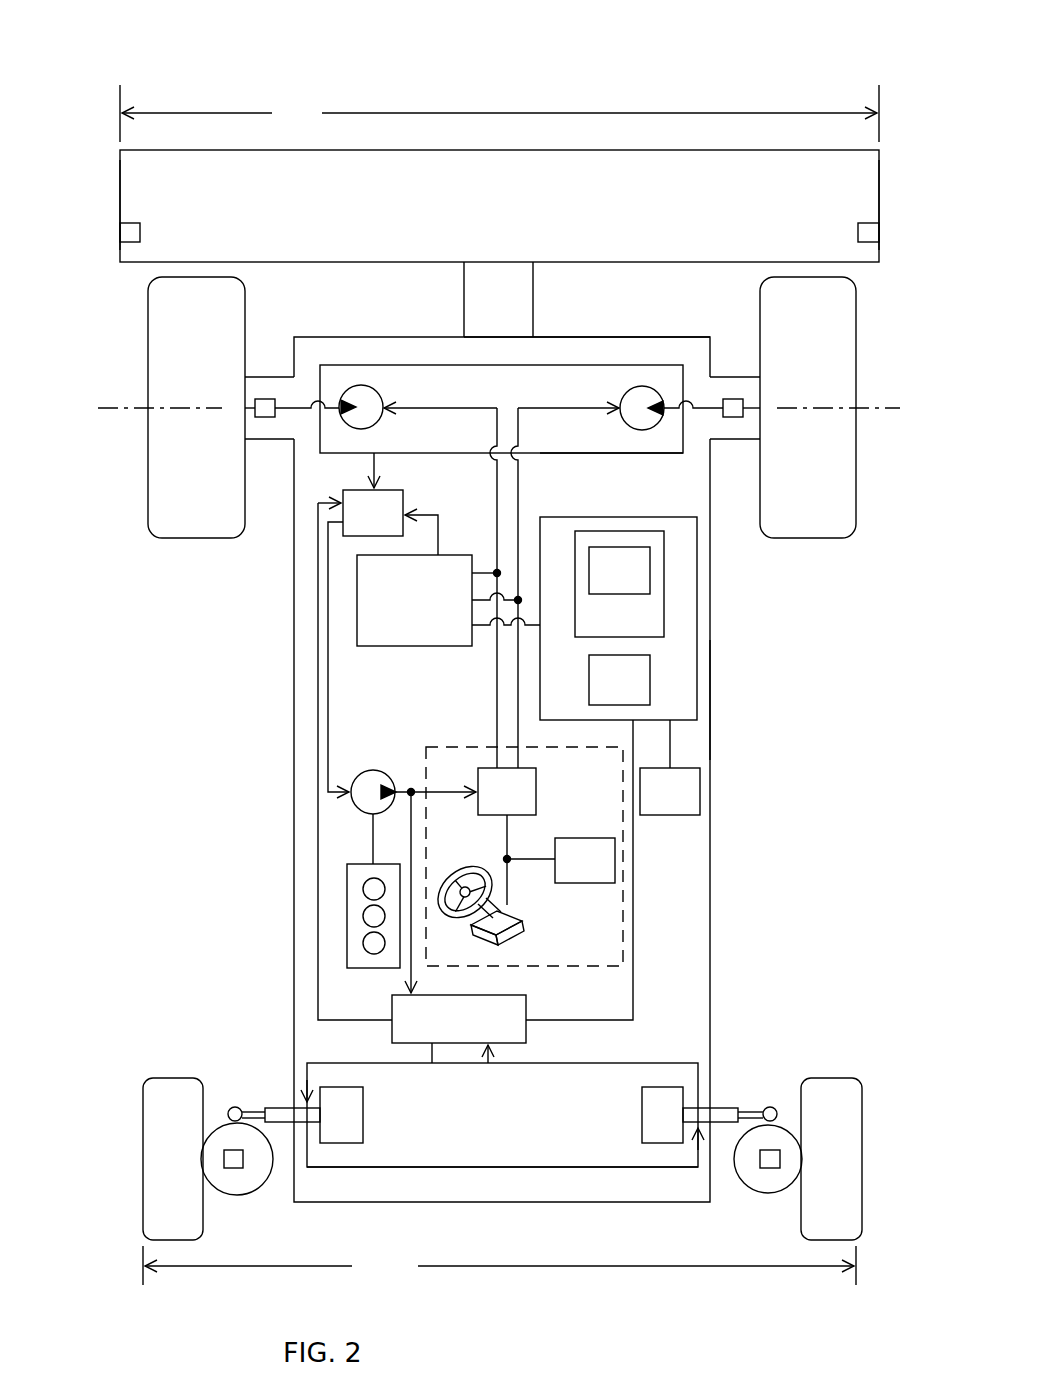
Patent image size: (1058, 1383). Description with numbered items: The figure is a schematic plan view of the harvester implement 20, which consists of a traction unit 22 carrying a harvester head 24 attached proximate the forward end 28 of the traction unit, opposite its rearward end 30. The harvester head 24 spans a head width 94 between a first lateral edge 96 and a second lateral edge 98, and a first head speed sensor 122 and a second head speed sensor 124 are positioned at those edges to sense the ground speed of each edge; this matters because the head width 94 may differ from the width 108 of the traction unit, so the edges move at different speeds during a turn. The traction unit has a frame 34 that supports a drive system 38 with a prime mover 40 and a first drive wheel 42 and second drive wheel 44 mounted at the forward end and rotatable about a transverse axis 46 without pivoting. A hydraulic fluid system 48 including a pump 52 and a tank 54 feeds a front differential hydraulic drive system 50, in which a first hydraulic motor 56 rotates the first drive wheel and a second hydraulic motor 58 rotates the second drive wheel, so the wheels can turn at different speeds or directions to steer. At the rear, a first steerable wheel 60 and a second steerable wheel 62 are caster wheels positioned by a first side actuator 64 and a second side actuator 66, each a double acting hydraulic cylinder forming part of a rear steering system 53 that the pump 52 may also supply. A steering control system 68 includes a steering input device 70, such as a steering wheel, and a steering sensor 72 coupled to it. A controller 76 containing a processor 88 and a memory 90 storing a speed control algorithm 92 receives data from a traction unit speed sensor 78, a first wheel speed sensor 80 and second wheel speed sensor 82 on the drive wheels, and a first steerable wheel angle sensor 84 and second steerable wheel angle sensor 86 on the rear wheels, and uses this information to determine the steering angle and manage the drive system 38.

The harvester implement 20 is at (697, 56).
The traction unit 22 is at (712, 850).
The harvester head 24 is at (403, 147).
The forward end 28 is at (583, 337).
The rearward end 30 is at (630, 1202).
The frame 34 is at (710, 707).
The drive system 38 is at (597, 461).
The prime mover 40 is at (355, 864).
The first drive wheel 42 is at (184, 500).
The second drive wheel 44 is at (805, 500).
The transverse axis 46 is at (95, 412).
The hydraulic fluid system 48 is at (503, 530).
The front differential hydraulic drive system 50 is at (545, 365).
The pump 52 is at (375, 770).
The rear steering system 53 is at (488, 1172).
The tank 54 is at (357, 526).
The first hydraulic motor 56 is at (378, 392).
The second hydraulic motor 58 is at (620, 395).
The first steerable wheel 60 is at (175, 1110).
The second steerable wheel 62 is at (830, 1110).
The first side actuator 64 is at (280, 1108).
The second side actuator 66 is at (725, 1108).
The steering control system 68 is at (540, 968).
The steering input device 70 is at (500, 925).
The steering sensor 72 is at (569, 873).
The controller 76 is at (697, 663).
The traction unit speed sensor 78 is at (654, 805).
The first wheel speed sensor 80 is at (265, 399).
The second wheel speed sensor 82 is at (733, 399).
The first steerable wheel angle sensor 84 is at (232, 1170).
The second steerable wheel angle sensor 86 is at (770, 1170).
The processor 88 is at (603, 694).
The memory 90 is at (664, 615).
The speed control algorithm 92 is at (603, 584).
The head width 94 is at (499, 113).
The first lateral edge 96 is at (120, 197).
The second lateral edge 98 is at (879, 197).
The width of the traction unit 108 is at (499, 1265).
The first head speed sensor 122 is at (130, 233).
The second head speed sensor 124 is at (868, 233).